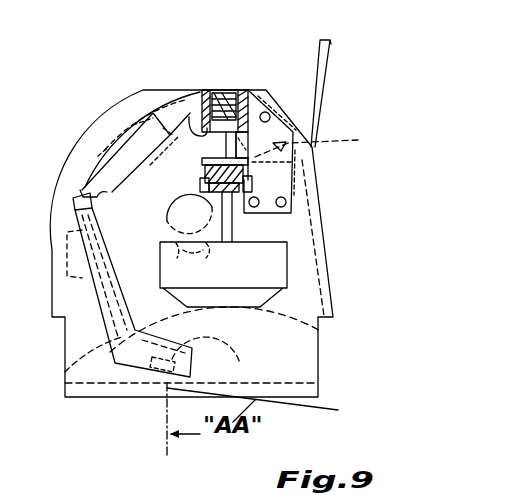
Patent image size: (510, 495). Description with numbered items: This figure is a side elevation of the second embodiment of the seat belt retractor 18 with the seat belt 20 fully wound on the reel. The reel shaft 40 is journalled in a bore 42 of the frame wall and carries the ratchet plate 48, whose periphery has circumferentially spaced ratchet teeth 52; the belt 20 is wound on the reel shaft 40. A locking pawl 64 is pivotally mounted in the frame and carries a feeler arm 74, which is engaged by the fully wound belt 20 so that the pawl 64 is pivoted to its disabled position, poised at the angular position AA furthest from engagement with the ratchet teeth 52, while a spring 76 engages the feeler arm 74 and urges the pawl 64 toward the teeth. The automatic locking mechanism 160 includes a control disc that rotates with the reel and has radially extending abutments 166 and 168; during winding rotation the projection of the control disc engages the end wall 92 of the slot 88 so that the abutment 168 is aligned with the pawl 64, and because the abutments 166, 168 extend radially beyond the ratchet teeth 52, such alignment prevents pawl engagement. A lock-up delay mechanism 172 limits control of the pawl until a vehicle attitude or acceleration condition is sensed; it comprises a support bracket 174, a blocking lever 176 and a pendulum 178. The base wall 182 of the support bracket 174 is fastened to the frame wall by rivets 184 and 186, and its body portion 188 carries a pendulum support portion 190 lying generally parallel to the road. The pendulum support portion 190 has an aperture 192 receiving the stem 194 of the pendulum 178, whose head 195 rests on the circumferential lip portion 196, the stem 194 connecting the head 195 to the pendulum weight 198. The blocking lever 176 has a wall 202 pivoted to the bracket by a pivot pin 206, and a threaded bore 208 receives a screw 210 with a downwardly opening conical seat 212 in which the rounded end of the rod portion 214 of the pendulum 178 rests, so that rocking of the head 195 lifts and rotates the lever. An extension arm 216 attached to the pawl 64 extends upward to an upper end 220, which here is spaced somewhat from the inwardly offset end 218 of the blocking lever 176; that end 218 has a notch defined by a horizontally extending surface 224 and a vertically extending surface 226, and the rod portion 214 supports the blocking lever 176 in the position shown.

The seat belt retractor 18 is at (108, 66).
The seat belt 20 is at (330, 57).
The reel shaft 40 is at (166, 233).
The bore 42 is at (181, 250).
The ratchet plate 48 is at (320, 336).
The ratchet teeth 52 is at (242, 364).
The locking pawl 64 is at (140, 375).
The feeler arm 74 is at (122, 333).
The spring 76 is at (125, 350).
The slot 88 is at (270, 117).
The end wall 92 is at (352, 137).
The automatic locking mechanism 160 is at (72, 240).
The abutment 166 is at (67, 262).
The abutment 168 is at (173, 329).
The lock-up delay mechanism 172 is at (310, 232).
The support bracket 174 is at (262, 152).
The blocking lever 176 is at (167, 117).
The pendulum 178 is at (268, 255).
The base wall 182 is at (285, 200).
The rivet 184 is at (292, 221).
The rivet 186 is at (256, 208).
The body portion 188 is at (200, 195).
The pendulum support portion 190 is at (205, 190).
The aperture 192 is at (205, 195).
The stem 194 is at (223, 274).
The head 195 is at (270, 166).
The circumferential lip portion 196 is at (205, 176).
The pendulum weight 198 is at (268, 284).
The wall 202 is at (321, 41).
The pivot pin 206 is at (285, 107).
The threaded bore 208 is at (240, 97).
The screw 210 is at (212, 90).
The conical seat 212 is at (190, 113).
The rod portion 214 is at (244, 97).
The extension arm 216 is at (98, 278).
The inwardly offset end 218 is at (120, 165).
The upper end 220 is at (77, 207).
The horizontally extending surface 224 is at (82, 188).
The vertically extending surface 226 is at (100, 197).